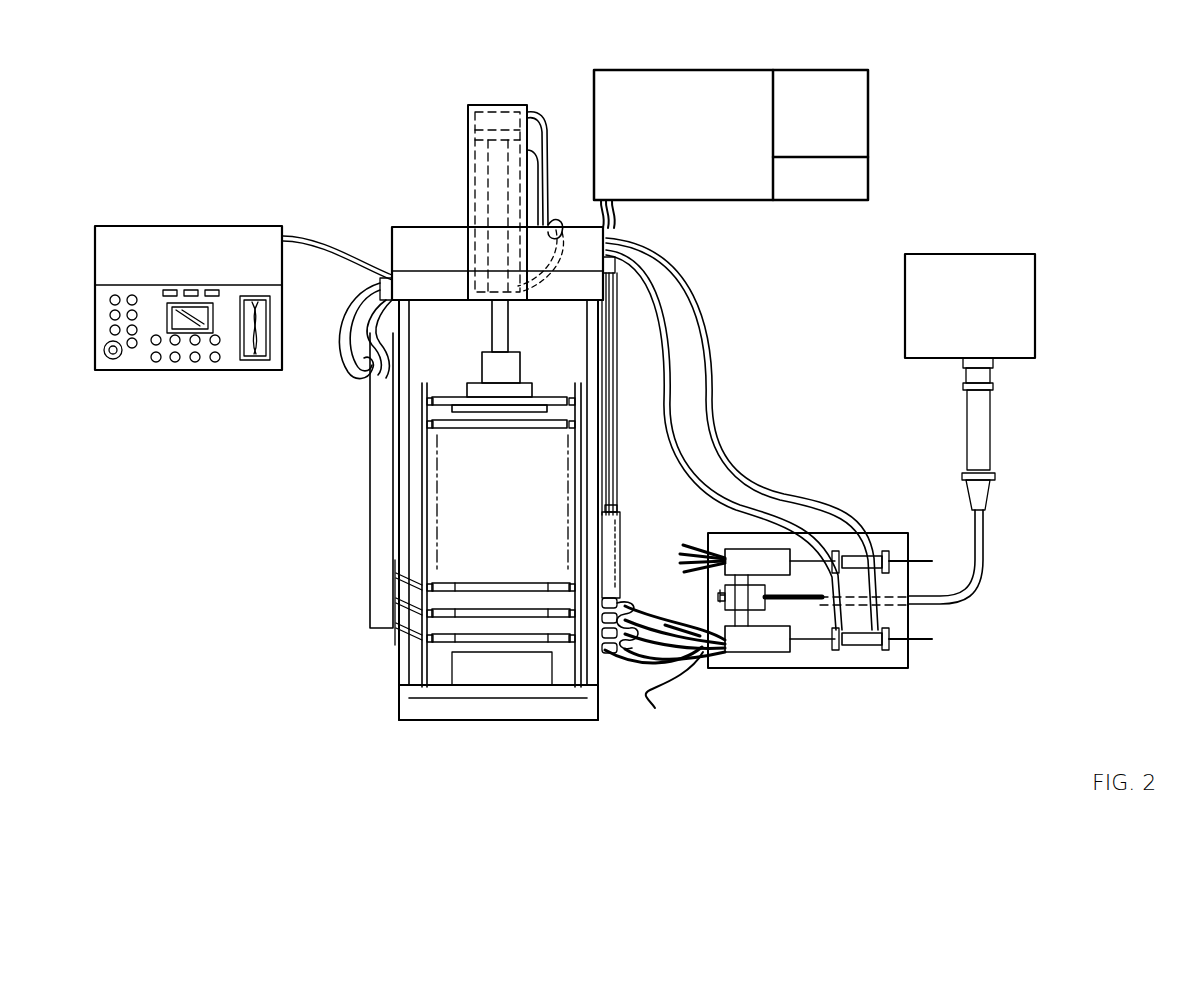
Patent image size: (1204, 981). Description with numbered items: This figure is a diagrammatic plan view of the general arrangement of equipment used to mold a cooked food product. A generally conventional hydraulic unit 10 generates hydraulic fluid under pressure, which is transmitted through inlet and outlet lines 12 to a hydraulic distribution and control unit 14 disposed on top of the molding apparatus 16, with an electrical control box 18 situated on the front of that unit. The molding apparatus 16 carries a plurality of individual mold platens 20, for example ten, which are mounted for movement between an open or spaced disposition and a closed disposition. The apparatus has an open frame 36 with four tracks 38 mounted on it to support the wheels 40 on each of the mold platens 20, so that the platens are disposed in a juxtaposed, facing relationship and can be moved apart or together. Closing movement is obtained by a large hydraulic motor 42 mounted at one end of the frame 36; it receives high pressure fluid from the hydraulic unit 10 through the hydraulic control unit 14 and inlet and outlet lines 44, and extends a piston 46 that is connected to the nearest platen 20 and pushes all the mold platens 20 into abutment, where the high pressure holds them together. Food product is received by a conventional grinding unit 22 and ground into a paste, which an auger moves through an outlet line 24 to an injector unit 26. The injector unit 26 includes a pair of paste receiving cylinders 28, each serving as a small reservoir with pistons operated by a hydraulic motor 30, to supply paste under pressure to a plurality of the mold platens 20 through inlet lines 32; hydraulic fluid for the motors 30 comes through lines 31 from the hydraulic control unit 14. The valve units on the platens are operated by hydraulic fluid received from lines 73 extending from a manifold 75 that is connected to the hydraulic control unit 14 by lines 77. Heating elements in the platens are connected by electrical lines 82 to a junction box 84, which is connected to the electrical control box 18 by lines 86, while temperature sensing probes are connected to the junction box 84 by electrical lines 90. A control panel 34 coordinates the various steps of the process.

The hydraulic unit 10 is at (746, 72).
The inlet and outlet lines 12 is at (618, 215).
The hydraulic distribution and control unit 14 is at (448, 230).
The molding apparatus 16 is at (400, 690).
The electrical control box 18 is at (447, 296).
The mold platens 20 is at (492, 428).
The grinding unit 22 is at (1035, 302).
The outlet line 24 is at (984, 578).
The injector unit 26 is at (812, 672).
The paste receiving cylinders 28 is at (752, 560).
The hydraulic motor 30 is at (870, 553).
The lines 31 is at (712, 423).
The inlet lines 32 is at (694, 540).
The control panel 34 is at (230, 230).
The open frame 36 is at (600, 358).
The tracks 38 is at (422, 392).
The wheels 40 is at (430, 402).
The hydraulic motor 42 is at (468, 135).
The inlet and outlet lines 44 is at (553, 148).
The piston 46 is at (508, 330).
The lines 73 is at (635, 602).
The manifold 75 is at (618, 562).
The lines 77 is at (612, 458).
The electrical lines 82 is at (398, 640).
The junction box 84 is at (370, 485).
The lines 86 is at (360, 374).
The electrical lines 90 is at (396, 613).